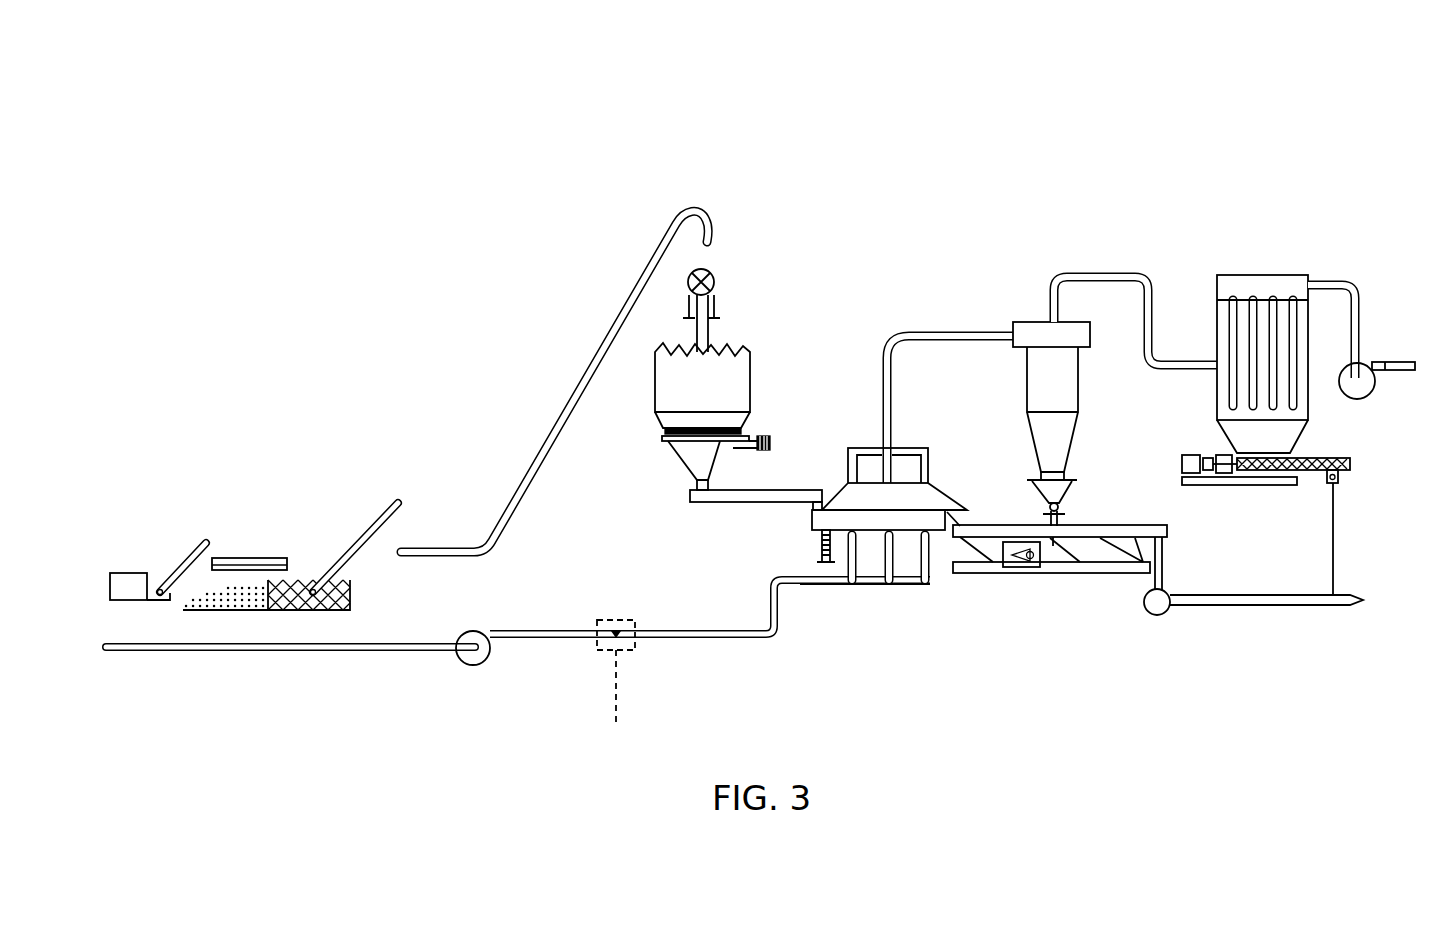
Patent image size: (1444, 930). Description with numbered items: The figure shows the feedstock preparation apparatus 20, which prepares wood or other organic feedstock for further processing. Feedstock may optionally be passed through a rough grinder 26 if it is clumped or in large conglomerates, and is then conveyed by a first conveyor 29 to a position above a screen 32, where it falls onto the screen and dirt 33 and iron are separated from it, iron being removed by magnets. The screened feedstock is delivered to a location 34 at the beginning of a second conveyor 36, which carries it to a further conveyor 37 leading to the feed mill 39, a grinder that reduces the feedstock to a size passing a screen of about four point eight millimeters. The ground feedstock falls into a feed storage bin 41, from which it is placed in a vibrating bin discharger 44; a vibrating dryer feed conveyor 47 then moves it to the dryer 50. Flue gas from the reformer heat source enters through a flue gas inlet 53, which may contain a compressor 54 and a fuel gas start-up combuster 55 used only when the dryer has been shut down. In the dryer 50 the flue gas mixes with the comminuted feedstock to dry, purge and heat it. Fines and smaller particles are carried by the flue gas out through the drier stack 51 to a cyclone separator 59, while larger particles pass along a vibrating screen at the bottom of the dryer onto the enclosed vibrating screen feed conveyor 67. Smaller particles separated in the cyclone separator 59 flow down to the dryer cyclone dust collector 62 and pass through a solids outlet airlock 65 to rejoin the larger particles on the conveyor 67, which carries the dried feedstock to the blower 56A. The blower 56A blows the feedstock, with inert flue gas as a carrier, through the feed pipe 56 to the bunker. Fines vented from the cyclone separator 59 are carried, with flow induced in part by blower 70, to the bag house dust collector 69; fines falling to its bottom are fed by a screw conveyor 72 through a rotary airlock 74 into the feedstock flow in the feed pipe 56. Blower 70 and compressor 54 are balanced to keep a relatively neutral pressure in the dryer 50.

The feedstock preparation apparatus 20 is at (438, 264).
The rough grinder 26 is at (123, 572).
The first conveyor 29 is at (191, 548).
The screen 32 is at (254, 557).
The dirt 33 is at (190, 598).
The location 34 is at (352, 598).
The second conveyor 36 is at (358, 540).
The conveyor 37 is at (580, 387).
The feed mill 39 is at (716, 278).
The feed storage bin 41 is at (660, 374).
The vibrating bin discharger 44 is at (694, 462).
The vibrating dryer feed conveyor 47 is at (706, 504).
The dryer 50 is at (952, 482).
The drier stack 51 is at (880, 397).
The flue gas inlet 53 is at (338, 652).
The compressor 54 is at (483, 660).
The fuel gas start-up combuster 55 is at (625, 618).
The feed pipe 56 is at (1256, 594).
The blower 56A is at (1158, 616).
The cyclone separator 59 is at (1022, 362).
The dryer cyclone dust collector 62 is at (1073, 488).
The solids outlet airlock 65 is at (1062, 506).
The vibrating screen feed conveyor 67 is at (978, 523).
The bag house dust collector 69 is at (1218, 323).
The blower 70 is at (1374, 359).
The screw conveyor 72 is at (1307, 474).
The rotary airlock 74 is at (1343, 482).